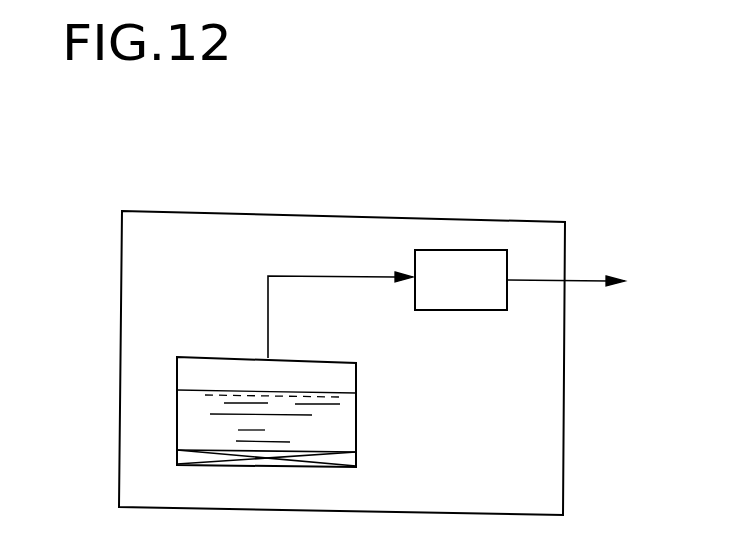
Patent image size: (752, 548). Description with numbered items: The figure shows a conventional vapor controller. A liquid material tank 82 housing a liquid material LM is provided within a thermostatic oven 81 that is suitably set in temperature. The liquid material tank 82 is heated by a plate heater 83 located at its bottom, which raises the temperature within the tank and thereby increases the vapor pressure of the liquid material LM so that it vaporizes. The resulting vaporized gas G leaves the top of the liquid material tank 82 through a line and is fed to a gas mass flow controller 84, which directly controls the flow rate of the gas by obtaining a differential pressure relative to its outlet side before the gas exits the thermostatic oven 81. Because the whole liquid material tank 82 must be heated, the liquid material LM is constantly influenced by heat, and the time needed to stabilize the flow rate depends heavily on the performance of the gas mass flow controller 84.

The thermostatic oven 81 is at (563, 487).
The liquid material tank 82 is at (177, 418).
The plate heater 83 is at (350, 457).
The gas mass flow controller 84 is at (458, 310).
The liquid material LM is at (345, 415).
The vaporized gas G is at (340, 299).